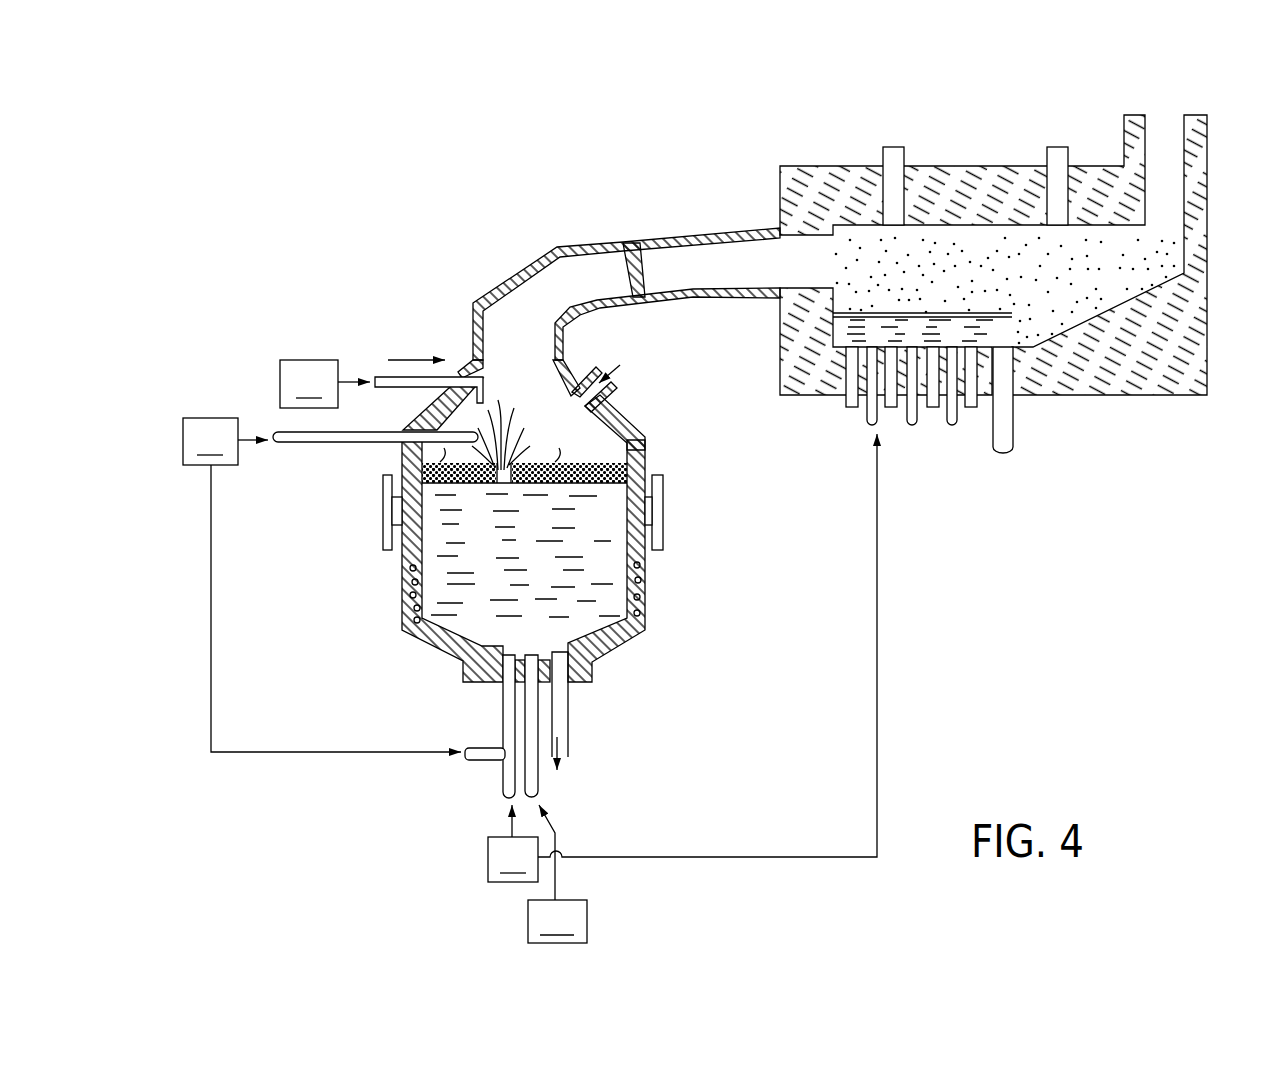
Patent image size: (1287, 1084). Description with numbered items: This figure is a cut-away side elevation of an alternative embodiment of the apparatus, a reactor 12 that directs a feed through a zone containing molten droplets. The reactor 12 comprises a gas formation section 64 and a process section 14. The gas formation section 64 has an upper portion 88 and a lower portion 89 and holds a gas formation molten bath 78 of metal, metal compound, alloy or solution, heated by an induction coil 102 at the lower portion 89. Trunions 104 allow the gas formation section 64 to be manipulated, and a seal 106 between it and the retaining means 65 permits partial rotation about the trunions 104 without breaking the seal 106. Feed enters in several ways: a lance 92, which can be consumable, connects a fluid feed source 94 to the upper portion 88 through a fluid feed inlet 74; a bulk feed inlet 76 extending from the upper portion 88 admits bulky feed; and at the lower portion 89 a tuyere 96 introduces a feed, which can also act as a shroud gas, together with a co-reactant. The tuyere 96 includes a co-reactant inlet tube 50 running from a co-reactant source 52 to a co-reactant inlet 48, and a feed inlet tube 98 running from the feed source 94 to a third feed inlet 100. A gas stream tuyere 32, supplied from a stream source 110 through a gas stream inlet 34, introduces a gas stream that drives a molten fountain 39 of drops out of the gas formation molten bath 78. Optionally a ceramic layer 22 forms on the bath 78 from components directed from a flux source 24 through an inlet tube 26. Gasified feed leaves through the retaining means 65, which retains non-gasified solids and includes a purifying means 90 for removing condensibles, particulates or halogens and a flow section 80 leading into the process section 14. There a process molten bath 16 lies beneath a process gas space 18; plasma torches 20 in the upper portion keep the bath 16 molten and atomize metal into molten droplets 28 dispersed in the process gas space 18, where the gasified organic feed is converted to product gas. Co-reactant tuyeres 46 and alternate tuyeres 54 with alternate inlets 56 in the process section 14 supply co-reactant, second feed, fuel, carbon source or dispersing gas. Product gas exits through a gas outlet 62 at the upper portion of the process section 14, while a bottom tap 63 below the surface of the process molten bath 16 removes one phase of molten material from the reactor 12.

The reactor 12 is at (1018, 642).
The process section 14 is at (1151, 401).
The process molten bath 16 is at (1026, 336).
The process gas space 18 is at (1053, 290).
The plasma torches 20 is at (1058, 147).
The ceramic layer 22 is at (447, 478).
The flux source 24 is at (325, 384).
The inlet tube 26 is at (378, 376).
The molten droplets 28 is at (1053, 262).
The gas stream tuyere 32 is at (546, 792).
The gas stream inlet 34 is at (573, 663).
The molten fountain 39 is at (501, 418).
The co-reactant tuyeres 46 is at (952, 372).
The co-reactant inlet 48 is at (457, 634).
The co-reactant inlet tube 50 is at (499, 778).
The co-reactant source 52 is at (682, 658).
The alternate tuyeres 54 is at (970, 363).
The alternate inlets 56 is at (887, 347).
The gas outlet 62 is at (1195, 113).
The bottom tap 63 is at (991, 461).
The gas formation section 64 is at (652, 436).
The retaining means 65 is at (592, 236).
The fluid feed inlet 74 is at (428, 414).
The bulk feed inlet 76 is at (613, 390).
The gas formation molten bath 78 is at (584, 601).
The flow section 80 is at (660, 263).
The upper portion 88 is at (626, 414).
The lower portion 89 is at (572, 670).
The purifying means 90 is at (636, 243).
The lance 92 is at (301, 450).
The fluid feed source 94 is at (322, 585).
The tuyere 96 is at (512, 668).
The feed inlet tube 98 is at (482, 741).
The third feed inlet 100 is at (470, 667).
The induction coil 102 is at (648, 580).
The trunions 104 is at (685, 503).
The seal 106 is at (565, 362).
The stream source 110 is at (557, 874).